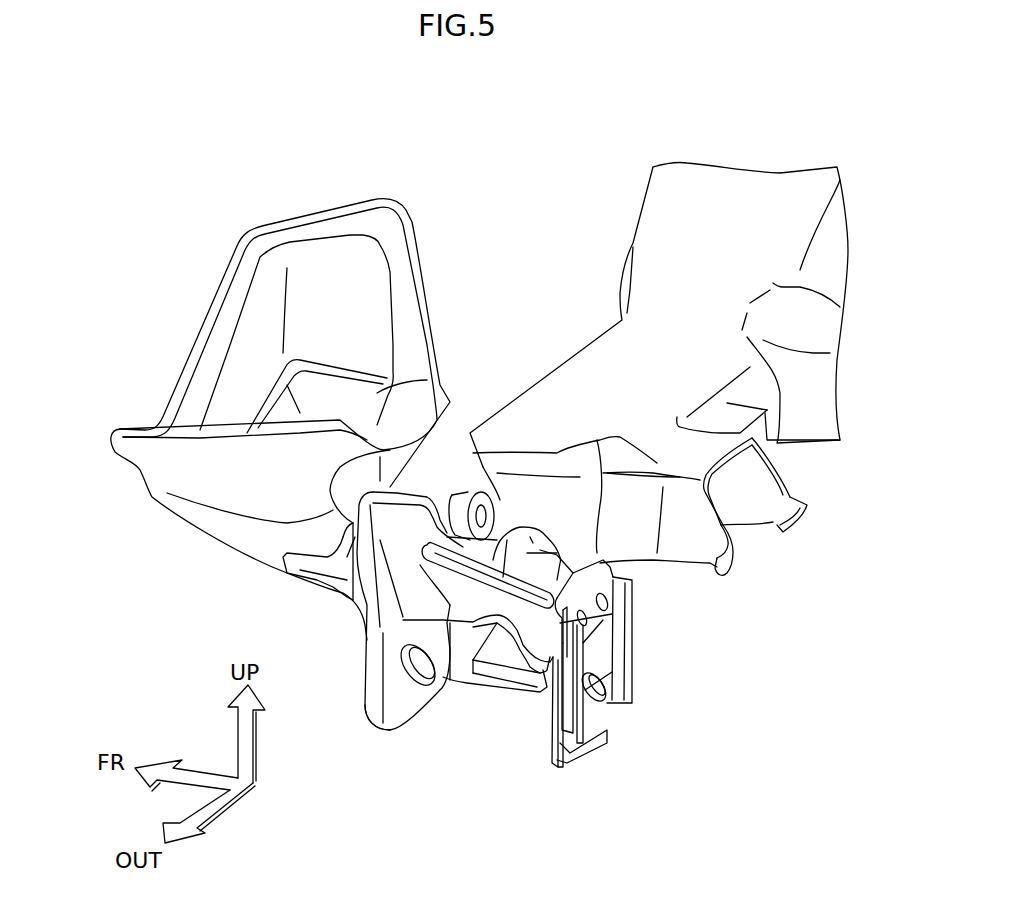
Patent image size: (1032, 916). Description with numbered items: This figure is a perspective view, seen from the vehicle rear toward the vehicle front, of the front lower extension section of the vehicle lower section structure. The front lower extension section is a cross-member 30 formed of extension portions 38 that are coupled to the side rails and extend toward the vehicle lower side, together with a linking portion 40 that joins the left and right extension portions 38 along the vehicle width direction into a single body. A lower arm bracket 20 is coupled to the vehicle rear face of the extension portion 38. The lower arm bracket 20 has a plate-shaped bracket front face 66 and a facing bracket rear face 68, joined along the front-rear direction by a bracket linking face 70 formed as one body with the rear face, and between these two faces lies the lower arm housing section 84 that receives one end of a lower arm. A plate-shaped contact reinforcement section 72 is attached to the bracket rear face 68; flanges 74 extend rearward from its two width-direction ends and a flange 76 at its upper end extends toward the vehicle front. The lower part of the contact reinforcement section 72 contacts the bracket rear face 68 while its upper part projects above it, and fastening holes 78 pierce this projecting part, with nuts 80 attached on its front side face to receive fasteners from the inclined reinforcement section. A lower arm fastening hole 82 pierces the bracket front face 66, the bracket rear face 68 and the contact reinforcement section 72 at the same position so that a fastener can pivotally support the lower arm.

The lower arm bracket 20 is at (374, 730).
The cross-member 30 is at (562, 391).
The extension portion 38 is at (246, 542).
The linking portion 40 is at (637, 397).
The bracket front face 66 is at (363, 716).
The bracket rear face 68 is at (577, 757).
The bracket linking face 70 is at (512, 568).
The contact reinforcement section 72 is at (633, 598).
The flange 74 is at (617, 648).
The flange 76 is at (596, 578).
The fastening hole 78 is at (587, 618).
The nut 80 is at (527, 643).
The lower arm fastening hole 82 is at (430, 683).
The lower arm housing section 84 is at (488, 735).